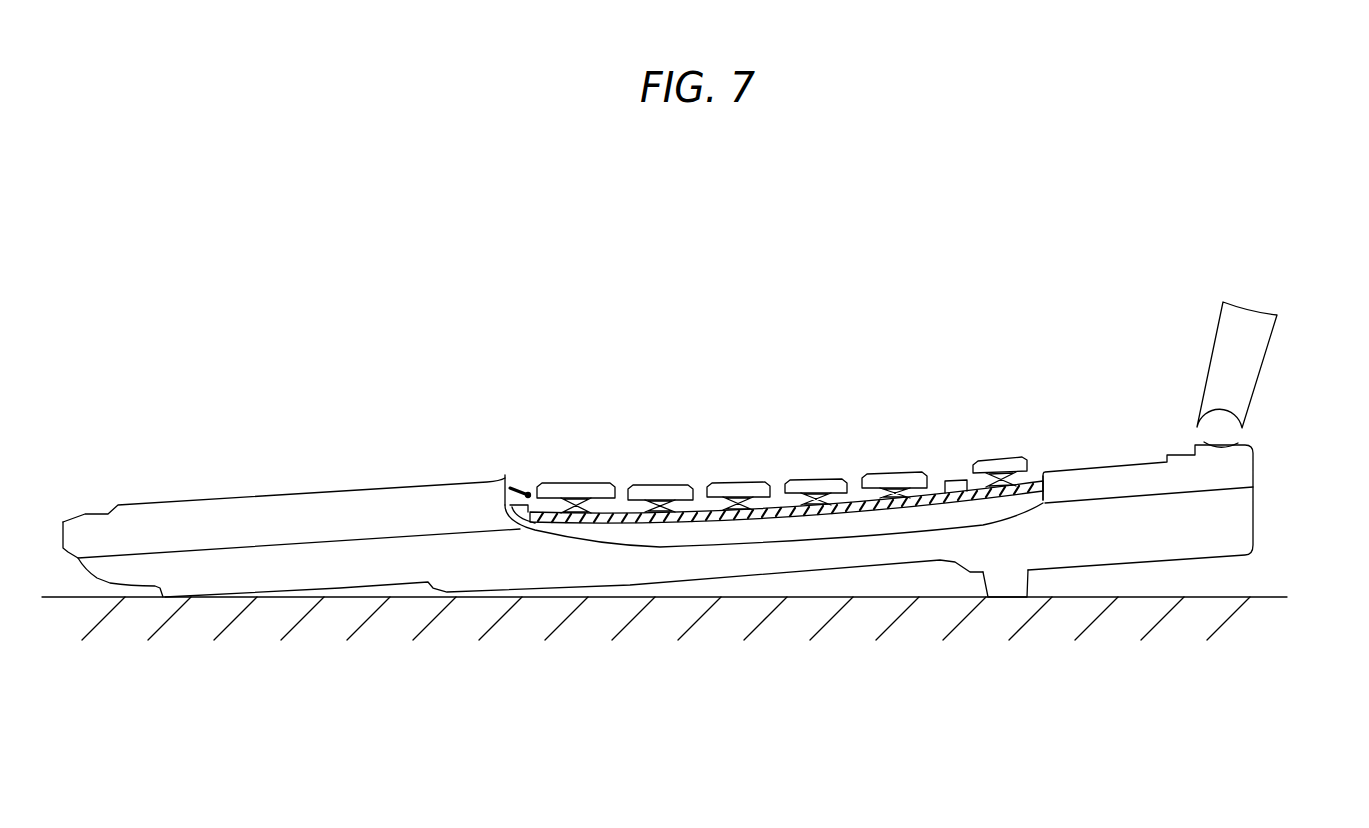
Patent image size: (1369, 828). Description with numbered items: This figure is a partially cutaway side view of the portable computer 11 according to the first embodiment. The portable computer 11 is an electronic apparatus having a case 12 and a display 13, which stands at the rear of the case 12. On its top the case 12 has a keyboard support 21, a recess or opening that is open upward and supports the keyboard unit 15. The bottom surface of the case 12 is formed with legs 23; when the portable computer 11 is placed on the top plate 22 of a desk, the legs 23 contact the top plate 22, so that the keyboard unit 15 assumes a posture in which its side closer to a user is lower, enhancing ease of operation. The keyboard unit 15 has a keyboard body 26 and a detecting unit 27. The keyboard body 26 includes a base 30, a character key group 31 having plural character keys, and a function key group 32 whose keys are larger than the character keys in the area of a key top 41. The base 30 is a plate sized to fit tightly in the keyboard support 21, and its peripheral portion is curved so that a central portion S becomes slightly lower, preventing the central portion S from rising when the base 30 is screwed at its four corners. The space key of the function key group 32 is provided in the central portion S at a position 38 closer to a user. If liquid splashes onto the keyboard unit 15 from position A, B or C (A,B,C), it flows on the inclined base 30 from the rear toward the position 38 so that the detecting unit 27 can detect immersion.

The portable computer 11 is at (1135, 258).
The case 12 is at (1243, 526).
The display 13 is at (1237, 392).
The keyboard unit 15 is at (997, 408).
The keyboard support 21 is at (596, 522).
The top plate 22 is at (1268, 595).
The legs 23 is at (1008, 587).
The keyboard body 26 is at (957, 478).
The detecting unit 27 is at (620, 490).
The base 30 is at (1046, 476).
The character key group 31 is at (898, 470).
The function key group 32 is at (557, 483).
The position closer to a user 38 is at (592, 443).
The key top 41 is at (1018, 458).
The positions A, B, C A,B,C is at (775, 468).
The central portion S is at (771, 535).